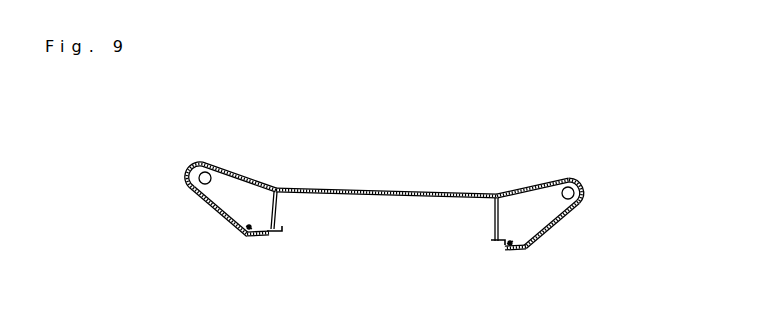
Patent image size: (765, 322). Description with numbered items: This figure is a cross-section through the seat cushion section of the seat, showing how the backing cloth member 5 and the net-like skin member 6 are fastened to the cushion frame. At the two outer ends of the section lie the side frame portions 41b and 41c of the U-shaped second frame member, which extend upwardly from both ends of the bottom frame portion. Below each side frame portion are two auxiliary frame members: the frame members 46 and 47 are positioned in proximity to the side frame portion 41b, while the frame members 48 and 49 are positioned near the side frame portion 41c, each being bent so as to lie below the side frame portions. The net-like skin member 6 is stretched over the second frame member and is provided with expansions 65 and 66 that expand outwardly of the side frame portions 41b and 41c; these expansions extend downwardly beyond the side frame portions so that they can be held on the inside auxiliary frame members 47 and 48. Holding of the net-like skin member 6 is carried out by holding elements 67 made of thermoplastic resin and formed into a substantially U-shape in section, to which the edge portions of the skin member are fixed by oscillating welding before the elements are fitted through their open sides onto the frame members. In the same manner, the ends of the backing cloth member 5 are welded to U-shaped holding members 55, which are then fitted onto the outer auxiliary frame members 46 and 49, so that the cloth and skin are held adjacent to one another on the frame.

The backing cloth member 5 is at (371, 199).
The net-like skin member 6 is at (444, 194).
The side frame portion 41b is at (201, 171).
The side frame portion 41c is at (576, 183).
The auxiliary frame member 46 is at (244, 238).
The auxiliary frame member 47 is at (283, 229).
The auxiliary frame member 48 is at (494, 241).
The auxiliary frame member 49 is at (527, 250).
The holding member 55 is at (248, 226).
The expansion 65 is at (222, 215).
The expansion 66 is at (561, 226).
The holding element 67 is at (272, 233).